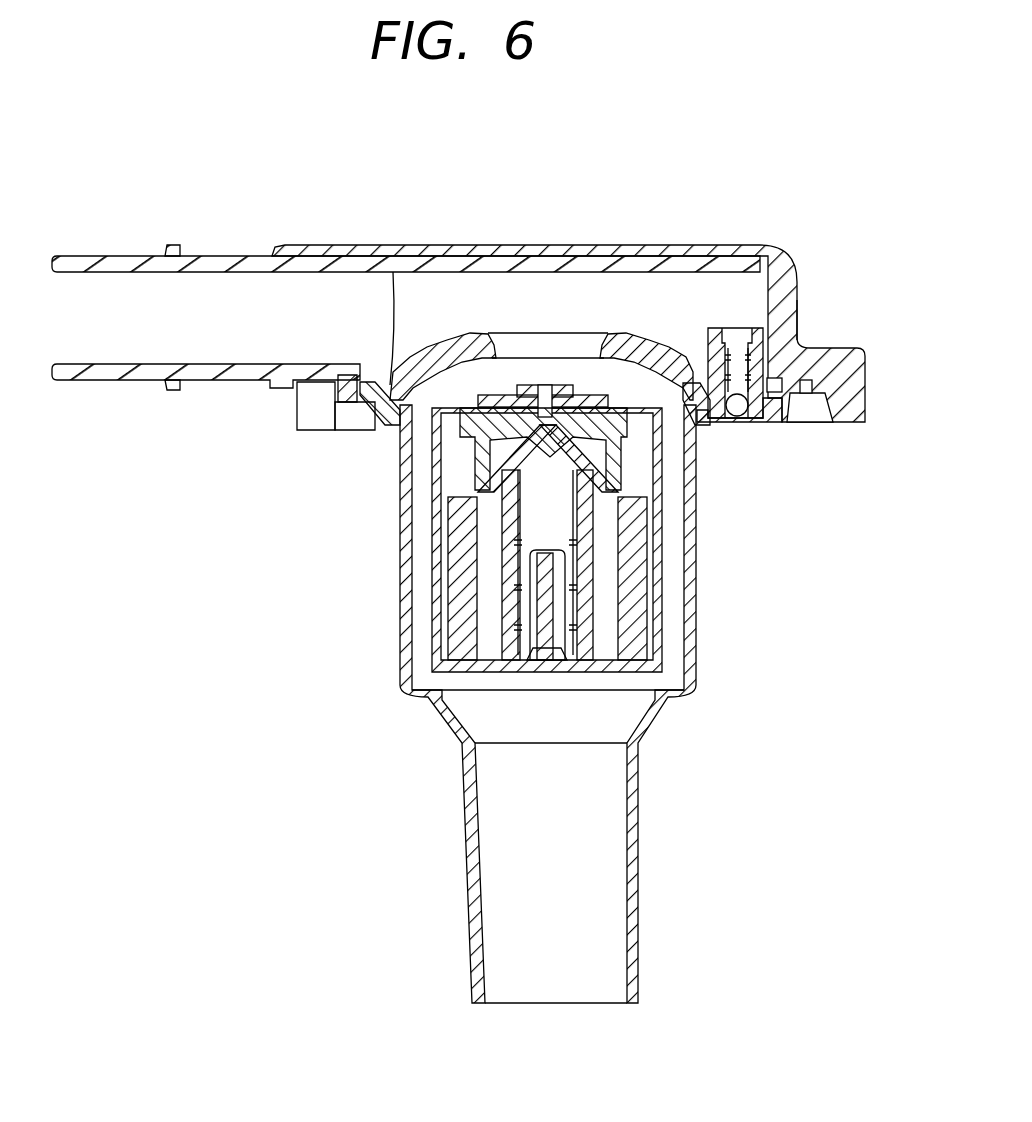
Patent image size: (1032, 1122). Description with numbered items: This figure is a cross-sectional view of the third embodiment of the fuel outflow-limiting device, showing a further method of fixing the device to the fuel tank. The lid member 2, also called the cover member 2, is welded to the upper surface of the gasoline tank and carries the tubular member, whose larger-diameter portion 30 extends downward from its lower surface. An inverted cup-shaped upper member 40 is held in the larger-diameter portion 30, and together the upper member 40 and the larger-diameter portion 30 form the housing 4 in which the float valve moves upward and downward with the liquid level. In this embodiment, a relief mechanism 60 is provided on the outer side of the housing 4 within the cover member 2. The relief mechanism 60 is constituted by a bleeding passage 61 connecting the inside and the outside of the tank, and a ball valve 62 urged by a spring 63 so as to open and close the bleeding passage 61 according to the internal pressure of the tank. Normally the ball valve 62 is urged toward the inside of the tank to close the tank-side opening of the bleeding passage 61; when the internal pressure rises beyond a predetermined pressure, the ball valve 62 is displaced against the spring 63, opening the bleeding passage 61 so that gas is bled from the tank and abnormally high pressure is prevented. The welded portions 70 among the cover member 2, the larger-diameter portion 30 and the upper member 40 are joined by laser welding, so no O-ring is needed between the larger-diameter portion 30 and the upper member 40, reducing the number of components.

The lid member 2 is at (342, 262).
The housing 4 is at (547, 584).
The larger-diameter portion 30 is at (695, 605).
The upper member 40 is at (640, 345).
The relief mechanism 60 is at (740, 328).
The bleeding passage 61 is at (799, 325).
The ball valve 62 is at (745, 418).
The spring 63 is at (727, 420).
The welded portions 70 is at (376, 428).